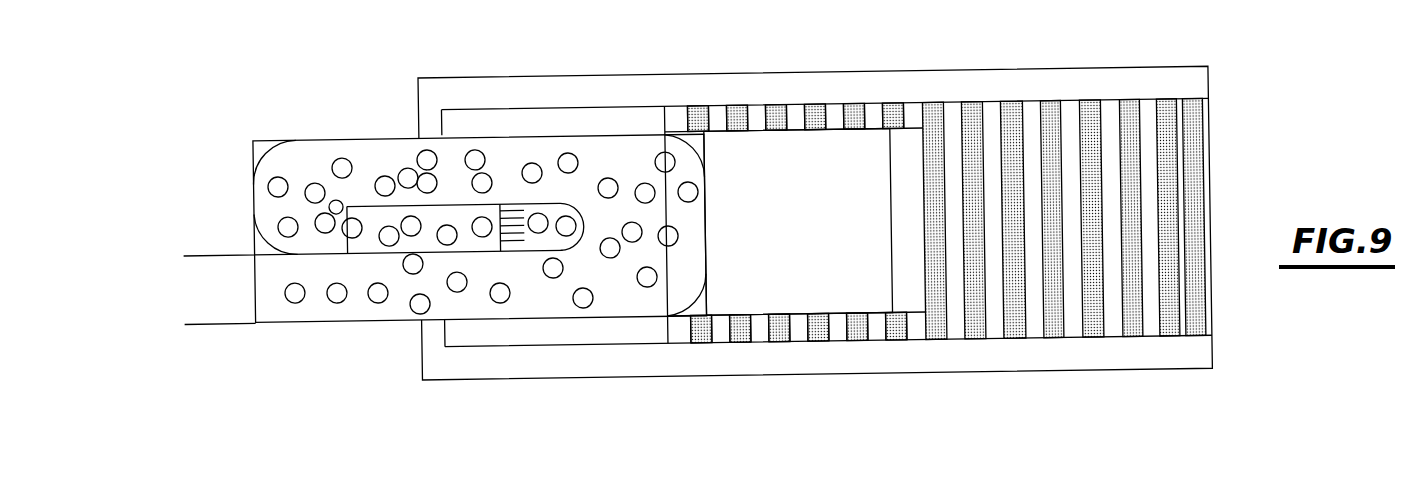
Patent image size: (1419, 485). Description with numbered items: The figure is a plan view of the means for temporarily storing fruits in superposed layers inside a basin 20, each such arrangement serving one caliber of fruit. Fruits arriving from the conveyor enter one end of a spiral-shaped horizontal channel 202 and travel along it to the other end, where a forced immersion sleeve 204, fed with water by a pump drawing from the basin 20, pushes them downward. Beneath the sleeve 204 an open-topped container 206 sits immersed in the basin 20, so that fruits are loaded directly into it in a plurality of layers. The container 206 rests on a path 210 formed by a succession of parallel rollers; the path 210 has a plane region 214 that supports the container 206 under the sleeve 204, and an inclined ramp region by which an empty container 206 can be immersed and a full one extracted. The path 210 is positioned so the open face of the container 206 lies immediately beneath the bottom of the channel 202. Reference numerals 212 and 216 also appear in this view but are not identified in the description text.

The basin 20 is at (747, 433).
The spiral-shaped horizontal channel 202 is at (372, 152).
The forced immersion sleeve 204 is at (556, 214).
The container 206 is at (706, 312).
The path 210 is at (975, 337).
The element 212 is at (949, 135).
The plane region 214 is at (638, 415).
The element 216 is at (1011, 159).